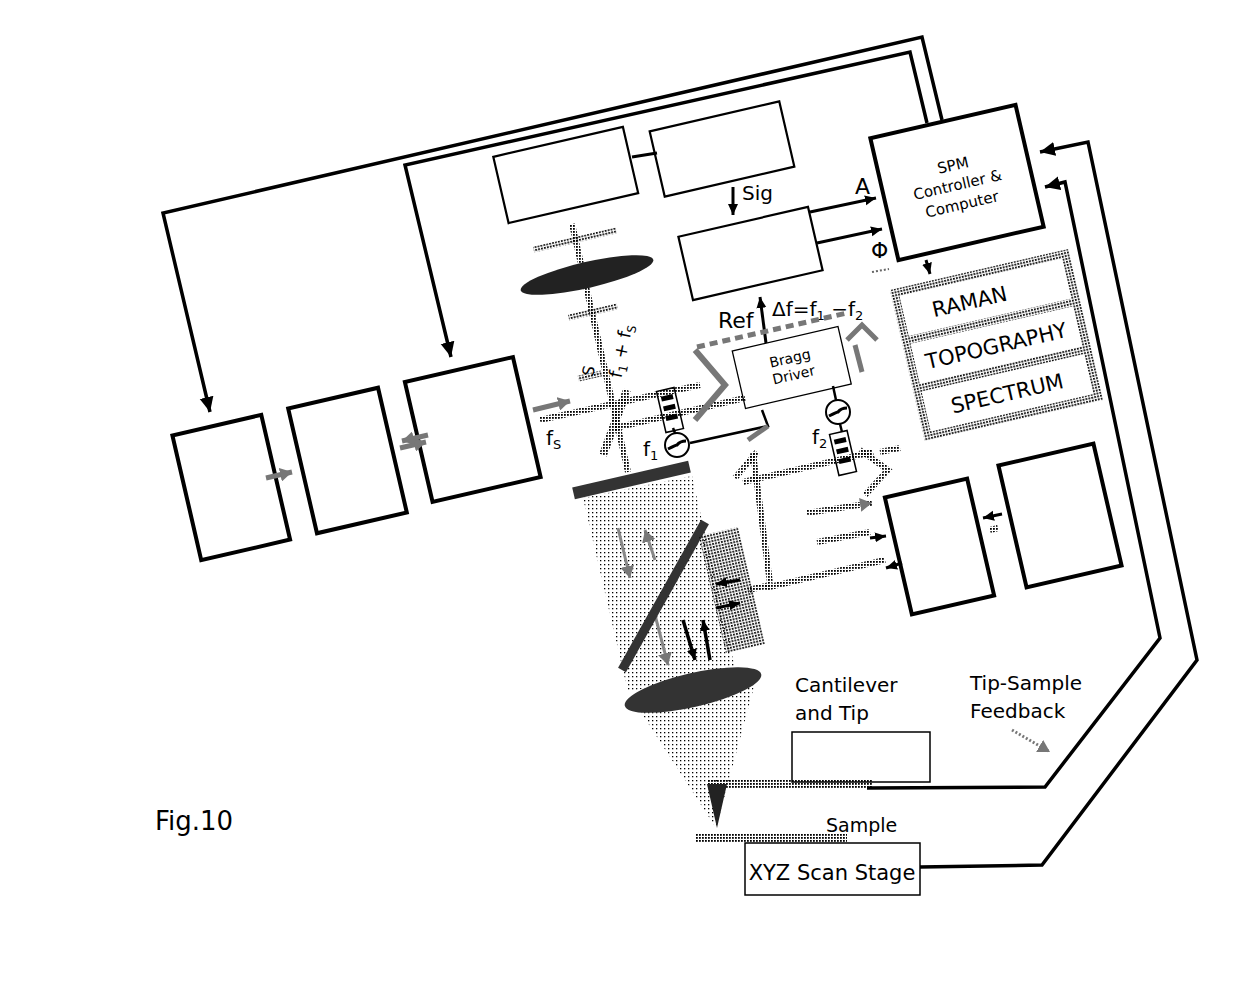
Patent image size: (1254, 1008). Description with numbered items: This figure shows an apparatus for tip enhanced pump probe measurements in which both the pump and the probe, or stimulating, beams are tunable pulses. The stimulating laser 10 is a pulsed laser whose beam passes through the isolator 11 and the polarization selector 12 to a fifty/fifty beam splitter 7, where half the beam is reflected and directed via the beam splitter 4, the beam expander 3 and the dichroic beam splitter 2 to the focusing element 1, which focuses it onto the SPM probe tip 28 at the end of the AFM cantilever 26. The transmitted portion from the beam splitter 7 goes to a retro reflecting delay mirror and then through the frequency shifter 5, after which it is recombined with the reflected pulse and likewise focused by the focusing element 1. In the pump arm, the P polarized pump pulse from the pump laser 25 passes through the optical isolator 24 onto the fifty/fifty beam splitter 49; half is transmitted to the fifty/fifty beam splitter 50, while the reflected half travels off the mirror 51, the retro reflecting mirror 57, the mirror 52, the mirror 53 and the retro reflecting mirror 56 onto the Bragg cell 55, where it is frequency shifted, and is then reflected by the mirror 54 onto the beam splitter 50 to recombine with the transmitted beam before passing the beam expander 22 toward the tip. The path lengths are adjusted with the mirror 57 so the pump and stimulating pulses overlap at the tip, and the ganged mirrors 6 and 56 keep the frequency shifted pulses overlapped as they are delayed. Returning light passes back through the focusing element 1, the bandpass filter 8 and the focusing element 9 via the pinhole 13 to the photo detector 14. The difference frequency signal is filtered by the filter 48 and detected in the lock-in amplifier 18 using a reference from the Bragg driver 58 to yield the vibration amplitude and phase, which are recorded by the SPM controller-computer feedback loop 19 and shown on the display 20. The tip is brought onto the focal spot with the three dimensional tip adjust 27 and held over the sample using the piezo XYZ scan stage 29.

The focusing element 1 is at (613, 699).
The dichroic beam splitter 2 is at (625, 641).
The beam expander 3 is at (693, 474).
The 50/50 beam splitter 4 is at (608, 448).
The frequency shifter 5 is at (698, 453).
The ganged mirror 6 is at (690, 361).
The 50/50 beam splitter 7 is at (580, 378).
The bandpass filter 8 is at (570, 318).
The focusing element 9 is at (515, 298).
The stimulating laser 10 is at (180, 425).
The isolator 11 is at (307, 395).
The polarization selector 12 is at (427, 362).
The pinhole 13 is at (528, 249).
The photo detector 14 is at (490, 178).
The lock-in amplifier 18 is at (676, 276).
The SPM controller-computer feedback loop 19 is at (866, 271).
The display 20 is at (897, 361).
The beam expander 22 is at (768, 638).
The optical isolator 24 is at (932, 616).
The pump laser 25 is at (1062, 590).
The AFM cantilever 26 is at (743, 773).
The 3D tip adjust 27 is at (960, 757).
The SPM probe tip 28 is at (688, 802).
The piezo XYZ scan stage 29 is at (727, 872).
The filter 48 is at (800, 122).
The 50/50 beam splitter 49 is at (833, 579).
The 50/50 beam splitter 50 is at (770, 595).
The mirror 51 is at (835, 539).
The mirror 52 is at (824, 507).
The mirror 53 is at (808, 472).
The mirror 54 is at (772, 448).
The Bragg cell 55 is at (860, 418).
The retro reflecting mirror 56 is at (908, 452).
The retro reflecting mirror 57 is at (877, 497).
The Bragg driver 58 is at (850, 352).